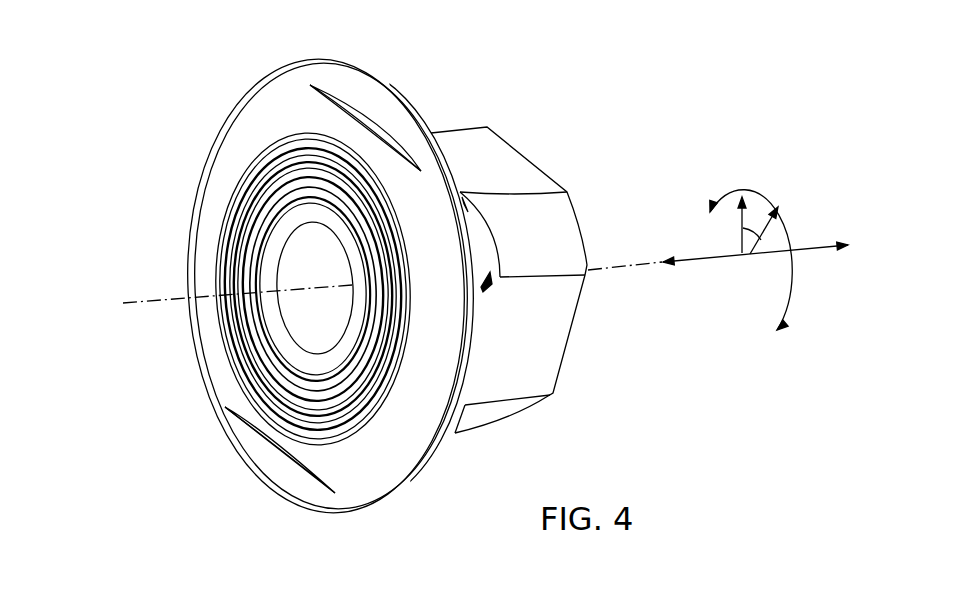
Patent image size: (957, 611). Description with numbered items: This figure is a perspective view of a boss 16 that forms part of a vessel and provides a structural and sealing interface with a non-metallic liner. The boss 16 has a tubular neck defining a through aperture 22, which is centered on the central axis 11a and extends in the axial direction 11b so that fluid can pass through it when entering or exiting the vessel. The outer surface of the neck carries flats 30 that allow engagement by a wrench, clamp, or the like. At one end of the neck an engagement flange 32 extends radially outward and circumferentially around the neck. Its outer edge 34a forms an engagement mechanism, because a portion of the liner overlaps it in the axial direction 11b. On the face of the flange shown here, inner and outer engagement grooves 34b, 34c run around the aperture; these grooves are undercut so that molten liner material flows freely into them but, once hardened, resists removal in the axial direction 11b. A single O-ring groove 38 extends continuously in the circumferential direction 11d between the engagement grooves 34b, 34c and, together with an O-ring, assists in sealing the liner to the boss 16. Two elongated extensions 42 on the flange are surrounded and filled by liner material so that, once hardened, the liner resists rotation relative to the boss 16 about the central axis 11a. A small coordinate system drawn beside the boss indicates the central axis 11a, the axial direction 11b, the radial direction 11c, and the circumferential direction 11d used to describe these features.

The boss 16 is at (562, 138).
The through aperture 22 is at (300, 270).
The flats 30 is at (504, 174).
The engagement flange 32 is at (383, 478).
The outer edge 34a is at (358, 510).
The engagement groove 34b is at (282, 134).
The engagement groove 34c is at (263, 220).
The O-ring groove 38 is at (260, 173).
The extensions 42 is at (368, 103).
The central axis 11a is at (622, 262).
The axial direction 11b is at (688, 264).
The radial direction 11c is at (752, 257).
The circumferential direction 11d is at (759, 174).